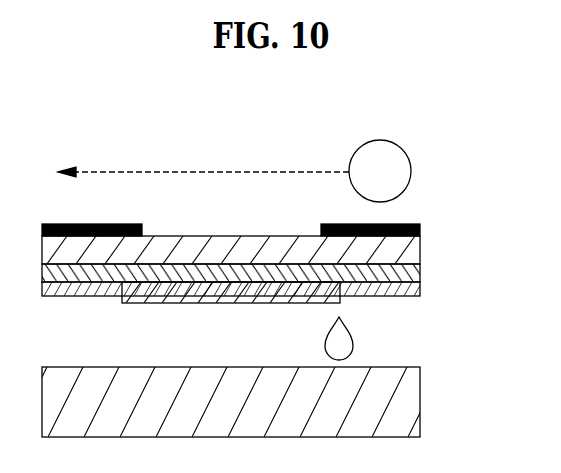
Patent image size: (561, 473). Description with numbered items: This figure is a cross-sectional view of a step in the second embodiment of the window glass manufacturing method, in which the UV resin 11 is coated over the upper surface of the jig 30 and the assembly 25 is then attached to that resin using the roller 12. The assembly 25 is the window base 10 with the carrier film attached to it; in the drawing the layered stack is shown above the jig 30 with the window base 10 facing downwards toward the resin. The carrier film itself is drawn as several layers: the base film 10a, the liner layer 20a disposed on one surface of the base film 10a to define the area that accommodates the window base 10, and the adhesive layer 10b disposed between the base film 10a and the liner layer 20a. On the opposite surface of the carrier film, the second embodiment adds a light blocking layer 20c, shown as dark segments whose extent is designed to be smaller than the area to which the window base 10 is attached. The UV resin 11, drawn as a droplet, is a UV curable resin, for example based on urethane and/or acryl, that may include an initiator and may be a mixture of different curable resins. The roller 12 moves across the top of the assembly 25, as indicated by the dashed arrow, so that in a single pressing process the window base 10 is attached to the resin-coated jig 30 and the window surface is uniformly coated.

The roller 12 is at (401, 146).
The assembly 25 is at (417, 202).
The light blocking layer 20c is at (421, 230).
The base film 10a is at (411, 250).
The adhesive layer 10b is at (413, 277).
The liner layer 20a is at (419, 292).
The window base 10 is at (227, 304).
The UV resin 11 is at (348, 345).
The jig 30 is at (410, 406).